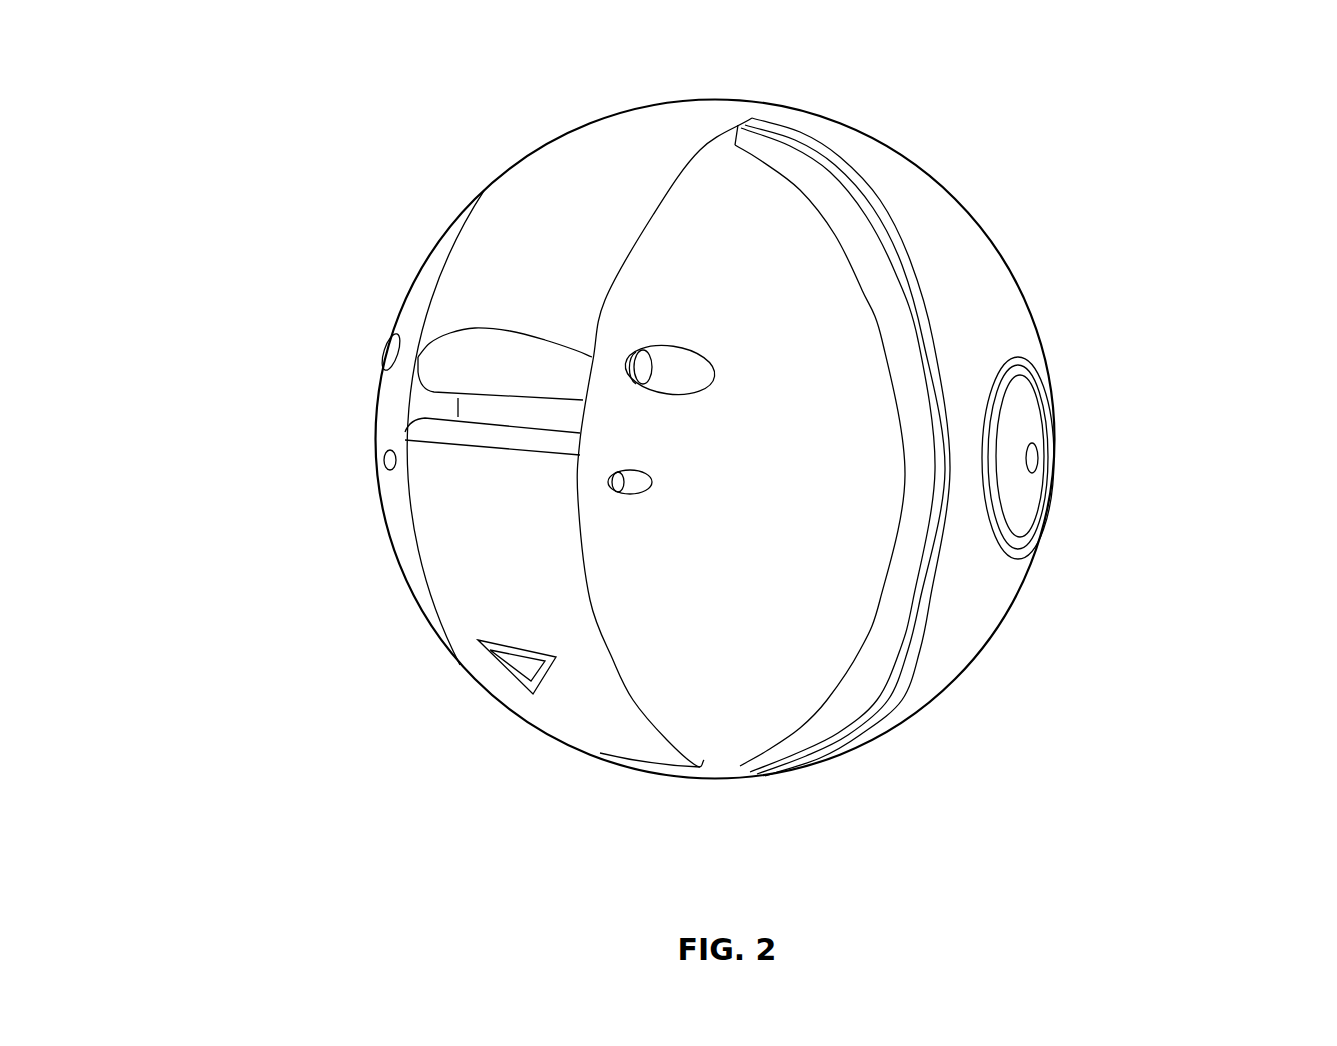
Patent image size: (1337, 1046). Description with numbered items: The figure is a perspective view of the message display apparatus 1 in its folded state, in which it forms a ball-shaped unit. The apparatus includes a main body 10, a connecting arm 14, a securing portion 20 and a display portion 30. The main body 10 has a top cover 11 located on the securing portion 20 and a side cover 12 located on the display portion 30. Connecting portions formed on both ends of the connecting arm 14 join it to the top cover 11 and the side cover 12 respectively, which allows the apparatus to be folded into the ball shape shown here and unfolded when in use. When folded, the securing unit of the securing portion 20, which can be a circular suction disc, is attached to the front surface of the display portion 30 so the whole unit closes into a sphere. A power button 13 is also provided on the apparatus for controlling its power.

The message display apparatus 1 is at (717, 411).
The main body 10 is at (717, 439).
The top cover 11 is at (656, 600).
The side cover 12 is at (957, 250).
The power button 13 is at (1025, 413).
The connecting arm 14 is at (542, 237).
The securing portion 20 is at (362, 508).
The display portion 30 is at (1012, 628).